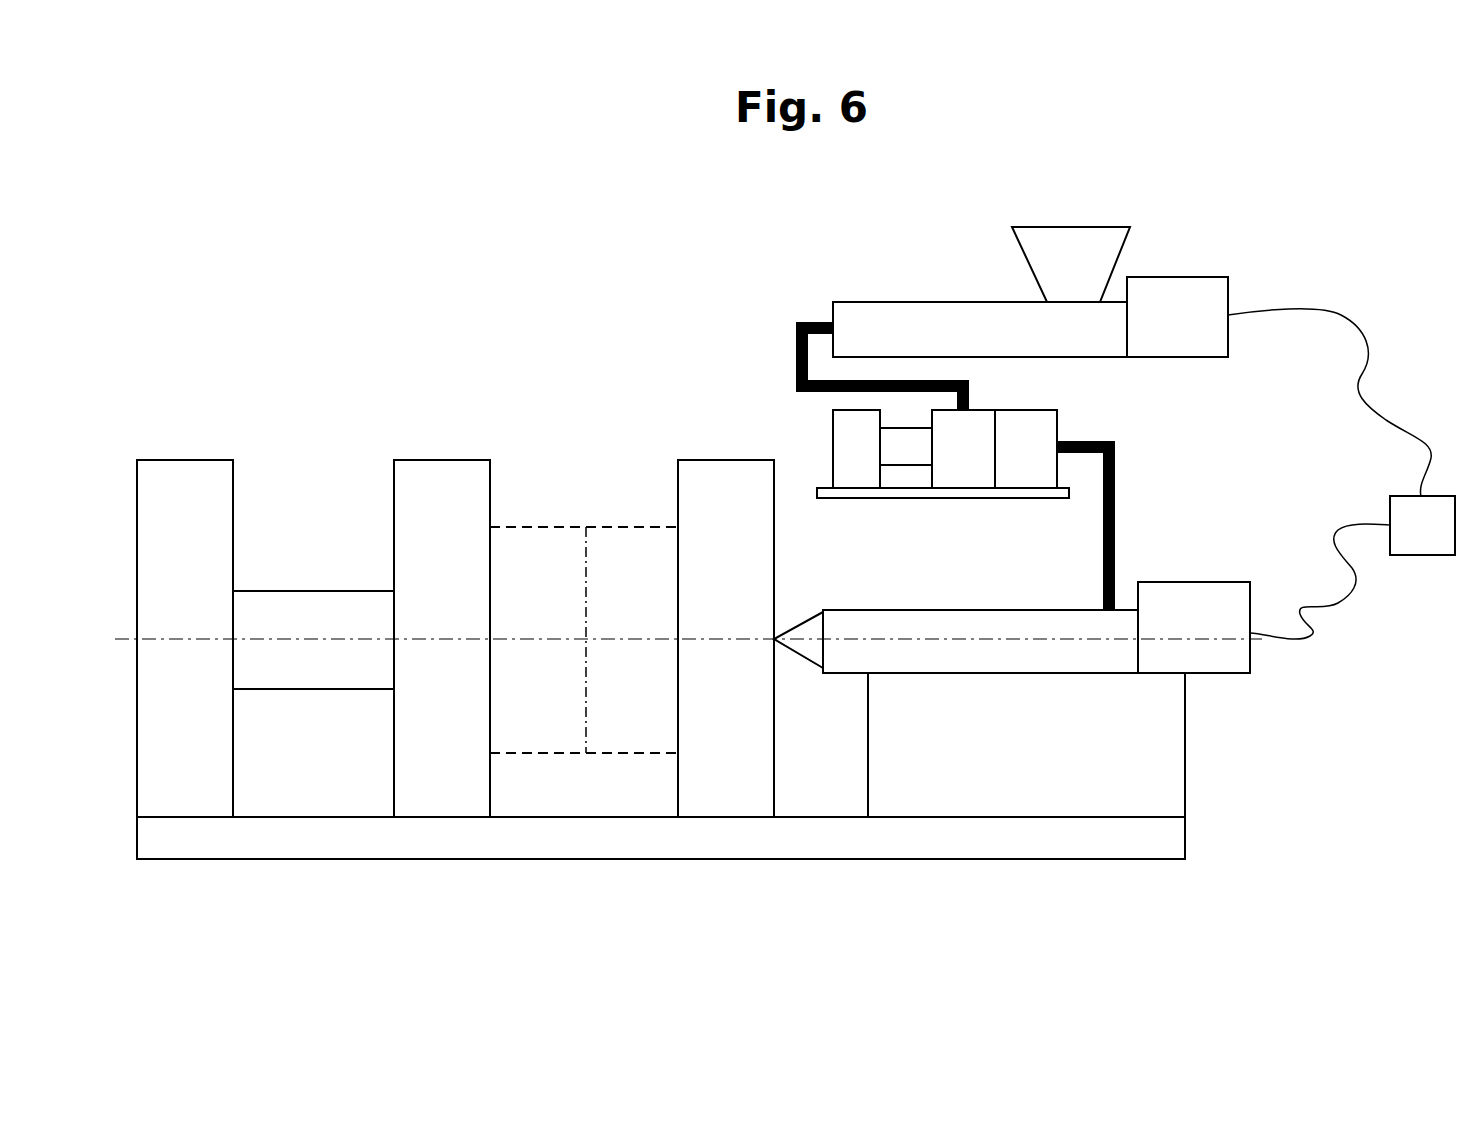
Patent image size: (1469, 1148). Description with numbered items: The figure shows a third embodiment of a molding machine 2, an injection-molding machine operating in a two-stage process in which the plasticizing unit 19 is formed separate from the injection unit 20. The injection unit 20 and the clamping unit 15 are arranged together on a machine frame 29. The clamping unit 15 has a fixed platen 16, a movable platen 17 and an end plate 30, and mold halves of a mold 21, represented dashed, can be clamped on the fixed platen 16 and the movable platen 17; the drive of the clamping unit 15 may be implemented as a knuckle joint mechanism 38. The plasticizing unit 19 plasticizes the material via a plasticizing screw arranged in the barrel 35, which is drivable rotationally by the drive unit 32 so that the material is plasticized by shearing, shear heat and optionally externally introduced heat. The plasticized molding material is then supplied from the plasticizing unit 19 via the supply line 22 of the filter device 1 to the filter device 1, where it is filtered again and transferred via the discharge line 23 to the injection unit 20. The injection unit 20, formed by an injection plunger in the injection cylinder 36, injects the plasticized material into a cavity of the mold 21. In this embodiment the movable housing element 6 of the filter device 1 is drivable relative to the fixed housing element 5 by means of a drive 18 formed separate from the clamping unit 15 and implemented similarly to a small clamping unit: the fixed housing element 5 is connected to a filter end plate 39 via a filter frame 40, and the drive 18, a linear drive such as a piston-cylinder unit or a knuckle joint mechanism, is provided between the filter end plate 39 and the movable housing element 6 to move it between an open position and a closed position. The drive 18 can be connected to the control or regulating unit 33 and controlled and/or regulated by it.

The filter device 1 is at (998, 371).
The molding machine 2 is at (284, 133).
The fixed housing element 5 is at (1025, 455).
The movable housing element 6 is at (950, 462).
The clamping unit 15 is at (333, 343).
The fixed platen 16 is at (727, 785).
The movable platen 17 is at (445, 790).
The drive 18 is at (907, 448).
The plasticizing unit 19 is at (1303, 235).
The injection unit 20 is at (1141, 521).
The mold 21 is at (625, 748).
The supply line 22 is at (797, 352).
The discharge line 23 is at (1093, 440).
The machine frame 29 is at (632, 833).
The end plate 30 is at (178, 482).
The drive unit 32 is at (1180, 308).
The control or regulating unit 33 is at (1426, 539).
The barrel 35 is at (939, 312).
The injection cylinder 36 is at (920, 628).
The knuckle joint mechanism 38 is at (308, 623).
The filter end plate 39 is at (854, 462).
The filter frame 40 is at (915, 492).